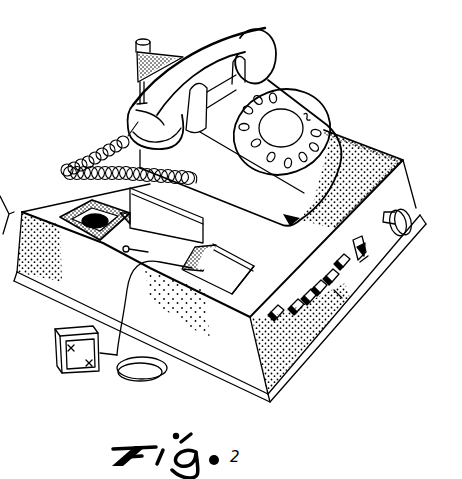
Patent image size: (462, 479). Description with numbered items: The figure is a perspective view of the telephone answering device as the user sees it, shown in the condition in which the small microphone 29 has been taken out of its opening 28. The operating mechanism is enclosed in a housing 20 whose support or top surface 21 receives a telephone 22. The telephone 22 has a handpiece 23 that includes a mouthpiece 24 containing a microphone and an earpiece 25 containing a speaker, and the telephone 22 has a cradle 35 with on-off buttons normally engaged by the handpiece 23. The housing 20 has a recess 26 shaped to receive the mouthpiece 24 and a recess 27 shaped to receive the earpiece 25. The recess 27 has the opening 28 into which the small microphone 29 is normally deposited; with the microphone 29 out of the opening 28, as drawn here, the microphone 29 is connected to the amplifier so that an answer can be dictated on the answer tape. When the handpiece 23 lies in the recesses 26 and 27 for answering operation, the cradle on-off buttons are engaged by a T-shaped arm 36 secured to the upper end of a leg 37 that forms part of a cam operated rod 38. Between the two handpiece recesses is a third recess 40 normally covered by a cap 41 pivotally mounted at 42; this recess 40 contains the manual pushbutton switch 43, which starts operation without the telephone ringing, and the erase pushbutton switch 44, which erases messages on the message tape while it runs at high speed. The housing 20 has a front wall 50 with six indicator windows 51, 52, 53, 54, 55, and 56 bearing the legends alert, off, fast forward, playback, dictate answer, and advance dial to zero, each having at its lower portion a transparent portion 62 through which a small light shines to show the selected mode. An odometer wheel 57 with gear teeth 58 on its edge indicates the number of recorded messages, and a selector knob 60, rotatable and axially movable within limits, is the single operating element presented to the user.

The housing 20 is at (236, 381).
The support or top surface 21 is at (354, 147).
The telephone 22 is at (289, 97).
The handpiece 23 is at (207, 40).
The mouthpiece 24 is at (172, 146).
The earpiece 25 is at (262, 72).
The recess 26 is at (92, 201).
The recess 27 is at (245, 264).
The opening 28 is at (212, 245).
The small microphone 29 is at (80, 375).
The cradle 35 is at (240, 63).
The T-shaped arm 36 is at (171, 57).
The leg 37 is at (137, 96).
The cam operated rod 38 is at (129, 82).
The third recess 40 is at (103, 256).
The cap 41 is at (190, 220).
The pivot 42 is at (130, 220).
The manual pushbutton switch 43 is at (190, 256).
The erase pushbutton switch 44 is at (115, 252).
The front wall 50 is at (283, 378).
The indicator window 51 is at (274, 311).
The indicator window 52 is at (297, 305).
The indicator window 53 is at (308, 291).
The indicator window 54 is at (320, 284).
The indicator window 55 is at (331, 272).
The indicator window 56 is at (342, 259).
The odometer wheel 57 is at (364, 262).
The gear teeth 58 is at (356, 240).
The selector knob 60 is at (410, 208).
The transparent portion 62 is at (340, 292).